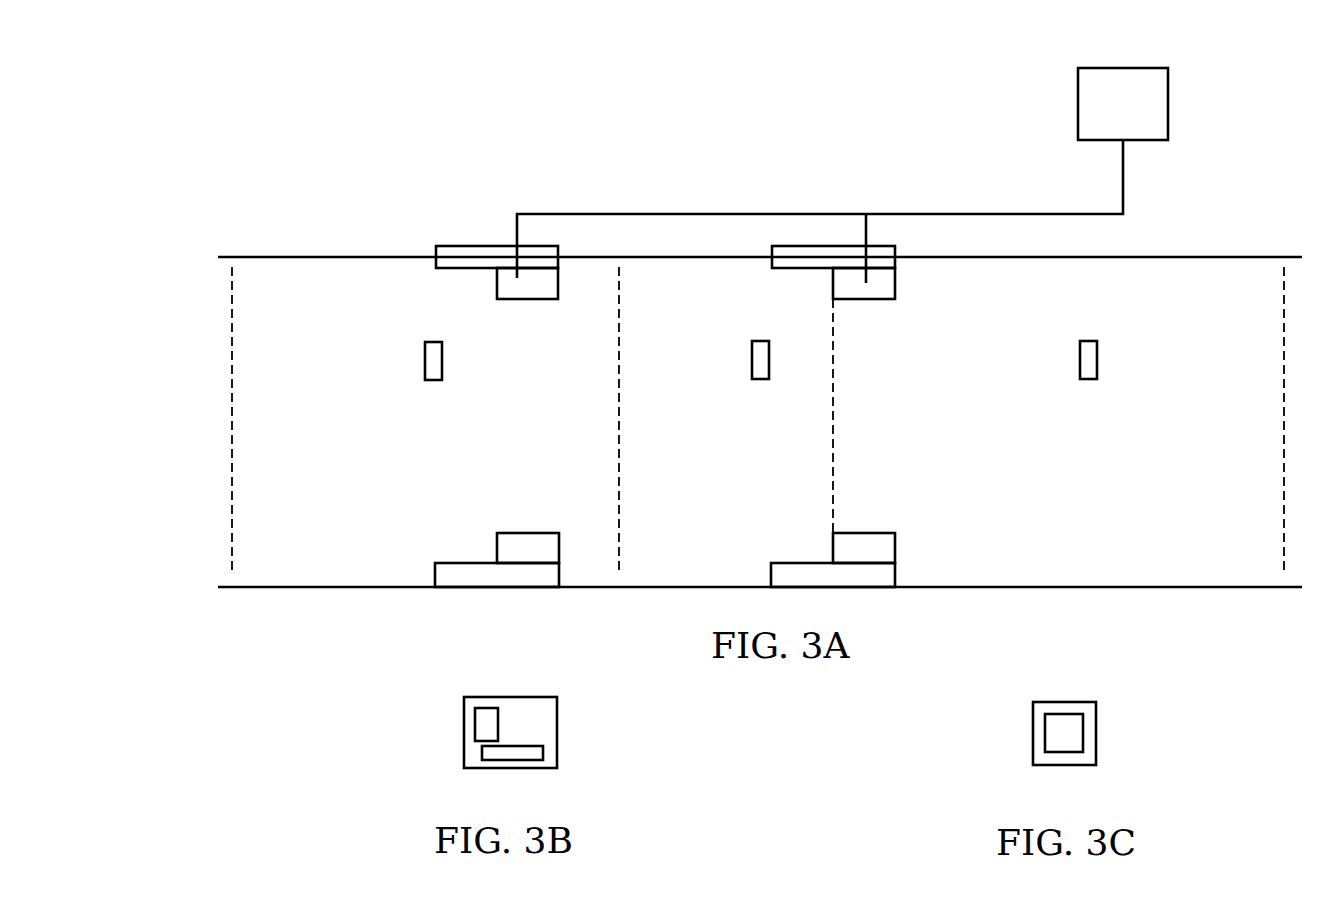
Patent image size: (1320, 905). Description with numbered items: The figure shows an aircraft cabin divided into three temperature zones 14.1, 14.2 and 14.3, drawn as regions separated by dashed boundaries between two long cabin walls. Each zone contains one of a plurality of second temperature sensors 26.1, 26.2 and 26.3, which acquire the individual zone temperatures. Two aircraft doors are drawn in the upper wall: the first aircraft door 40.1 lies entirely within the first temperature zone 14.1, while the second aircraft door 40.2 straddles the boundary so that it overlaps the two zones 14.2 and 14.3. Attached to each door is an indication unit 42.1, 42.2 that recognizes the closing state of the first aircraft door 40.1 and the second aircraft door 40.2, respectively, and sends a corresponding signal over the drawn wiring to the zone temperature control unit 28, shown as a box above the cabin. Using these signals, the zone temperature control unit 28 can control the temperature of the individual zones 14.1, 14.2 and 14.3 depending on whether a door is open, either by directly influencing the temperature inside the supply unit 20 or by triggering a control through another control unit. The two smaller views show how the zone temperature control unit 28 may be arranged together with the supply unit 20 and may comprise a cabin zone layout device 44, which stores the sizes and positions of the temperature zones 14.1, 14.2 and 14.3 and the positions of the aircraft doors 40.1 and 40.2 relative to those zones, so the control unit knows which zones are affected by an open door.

In FIG. 3A, the first temperature zone 14.1 is at (428, 474).
In FIG. 3A, the second temperature zone 14.2 is at (762, 474).
In FIG. 3A, the third temperature zone 14.3 is at (1119, 474).
In FIG. 3B, the supply unit 20 is at (543, 717).
In FIG. 3A, the second temperature sensor 26.1 is at (433, 362).
In FIG. 3A, the second temperature sensor 26.2 is at (760, 362).
In FIG. 3A, the second temperature sensor 26.3 is at (1088, 362).
In FIG. 3A, the zone temperature control unit 28 is at (1152, 98).
In FIG. 3B, the zone temperature control unit 28 is at (483, 722).
In FIG. 3C, the zone temperature control unit 28 is at (1088, 733).
In FIG. 3A, the first aircraft door 40.1 is at (451, 258).
In FIG. 3A, the second aircraft door 40.2 is at (800, 255).
In FIG. 3A, the indication unit 42.1 is at (547, 290).
In FIG. 3A, the indication unit 42.2 is at (885, 292).
In FIG. 3B, the cabin zone layout device 44 is at (528, 757).
In FIG. 3C, the cabin zone layout device 44 is at (1052, 732).